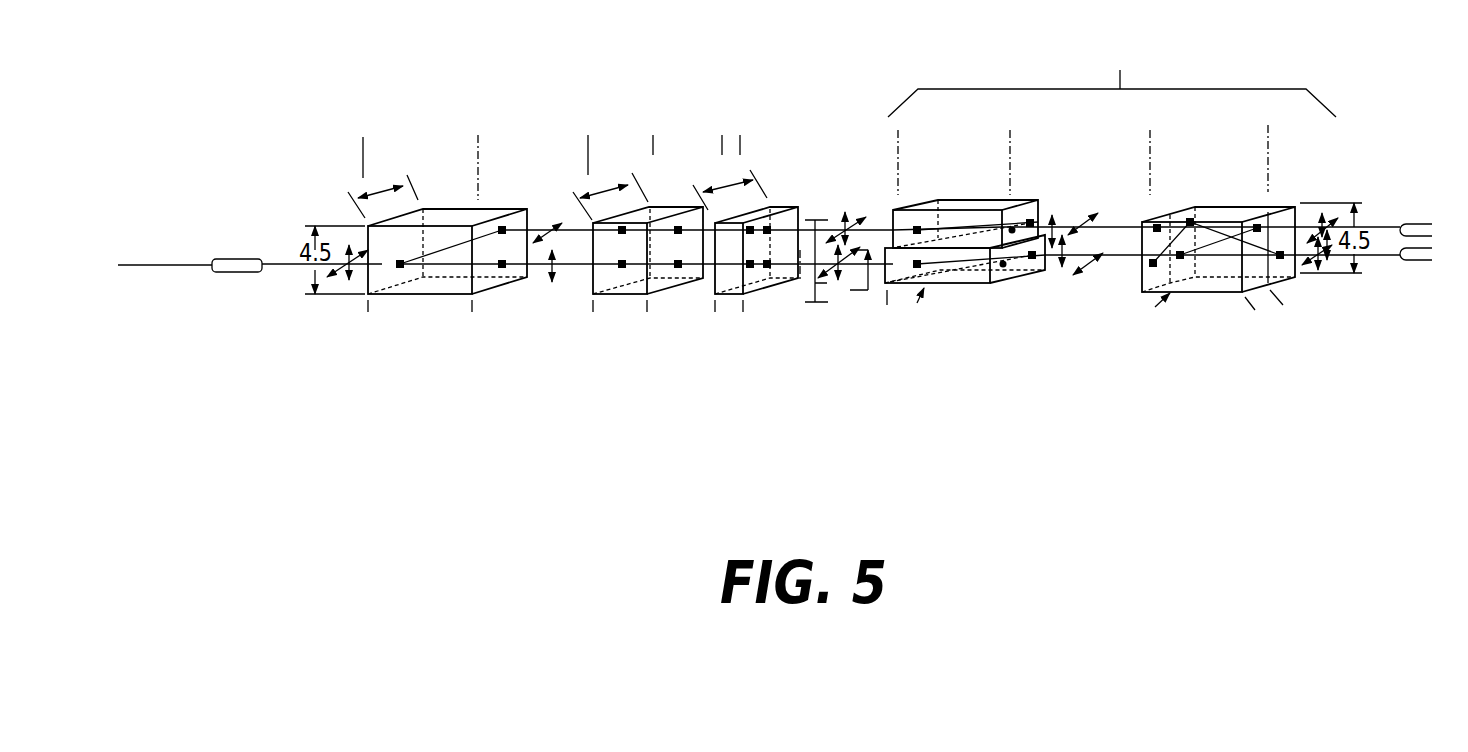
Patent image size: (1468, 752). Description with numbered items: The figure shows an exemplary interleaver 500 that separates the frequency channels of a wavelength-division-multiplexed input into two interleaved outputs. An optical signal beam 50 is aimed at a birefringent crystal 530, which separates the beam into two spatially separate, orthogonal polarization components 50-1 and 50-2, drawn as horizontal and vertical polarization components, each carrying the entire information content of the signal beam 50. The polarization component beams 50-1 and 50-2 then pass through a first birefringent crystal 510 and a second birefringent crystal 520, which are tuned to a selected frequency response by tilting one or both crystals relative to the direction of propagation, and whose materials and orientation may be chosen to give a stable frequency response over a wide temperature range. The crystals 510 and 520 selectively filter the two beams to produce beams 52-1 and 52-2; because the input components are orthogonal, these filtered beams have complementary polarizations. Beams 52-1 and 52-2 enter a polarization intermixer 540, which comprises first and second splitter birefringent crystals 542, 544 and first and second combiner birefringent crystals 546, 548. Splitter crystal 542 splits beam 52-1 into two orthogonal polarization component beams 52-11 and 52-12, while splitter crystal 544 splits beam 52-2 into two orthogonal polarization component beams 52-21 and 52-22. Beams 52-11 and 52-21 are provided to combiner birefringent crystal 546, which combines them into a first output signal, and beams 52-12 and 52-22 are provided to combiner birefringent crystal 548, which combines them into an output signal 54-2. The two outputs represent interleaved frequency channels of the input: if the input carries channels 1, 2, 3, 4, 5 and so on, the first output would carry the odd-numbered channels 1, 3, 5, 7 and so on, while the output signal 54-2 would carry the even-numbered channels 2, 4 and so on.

The interleaver 500 is at (332, 56).
The optical signal beam 50 is at (283, 272).
The birefringent crystal 530 is at (432, 296).
The first birefringent crystal 510 is at (622, 296).
The second birefringent crystal 520 is at (732, 296).
The polarization intermixer 540 is at (1112, 78).
The first splitter birefringent crystal 542 is at (970, 208).
The second splitter birefringent crystal 544 is at (965, 285).
The first combiner birefringent crystal 546 is at (1217, 293).
The second combiner birefringent crystal 548 is at (1293, 207).
The output signal 54-2 is at (1385, 220).
The first polarization component 50-1 is at (535, 243).
The second polarization component 50-2 is at (530, 277).
The filtered beam 52-1 is at (877, 227).
The filtered beam 52-2 is at (853, 280).
The polarization component beam 52-11 is at (1065, 226).
The polarization component beam 52-12 is at (1128, 222).
The polarization component beam 52-21 is at (1048, 282).
The polarization component beam 52-22 is at (1122, 255).
The channel 1 is at (497, 208).
The channel 2 is at (672, 205).
The channel 3 is at (410, 180).
The channel 4 is at (633, 178).
The channel 5 is at (940, 200).
The position 7 is at (1228, 205).